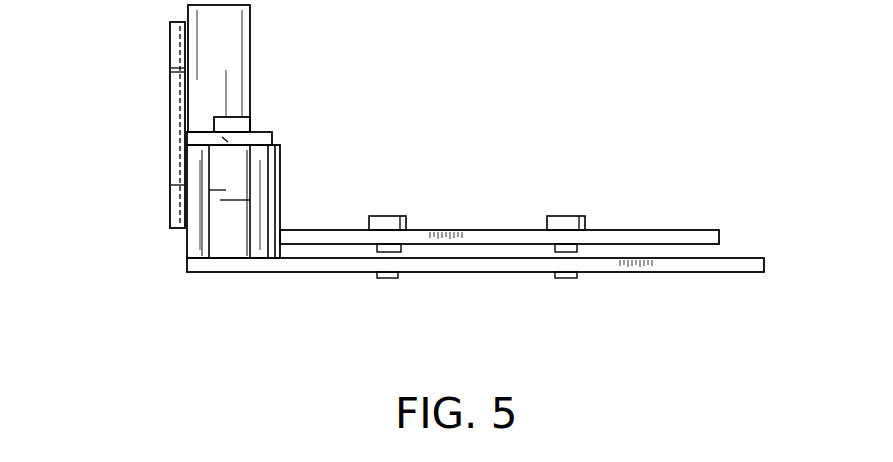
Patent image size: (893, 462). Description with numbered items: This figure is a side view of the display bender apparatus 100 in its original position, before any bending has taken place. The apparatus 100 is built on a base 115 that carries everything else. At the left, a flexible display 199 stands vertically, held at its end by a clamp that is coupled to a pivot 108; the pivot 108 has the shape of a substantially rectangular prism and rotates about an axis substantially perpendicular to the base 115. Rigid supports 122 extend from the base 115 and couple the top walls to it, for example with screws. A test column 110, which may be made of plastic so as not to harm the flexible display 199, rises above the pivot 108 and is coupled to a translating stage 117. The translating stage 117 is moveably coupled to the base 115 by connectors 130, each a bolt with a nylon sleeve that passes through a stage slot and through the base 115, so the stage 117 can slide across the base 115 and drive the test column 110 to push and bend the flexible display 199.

The display bender apparatus 100 is at (658, 146).
The pivot 108 is at (235, 178).
The test column 110 is at (230, 28).
The base 115 is at (710, 267).
The translating stage 117 is at (472, 238).
The rigid support 122 is at (250, 232).
The connector 130 is at (400, 250).
The flexible display 199 is at (180, 85).